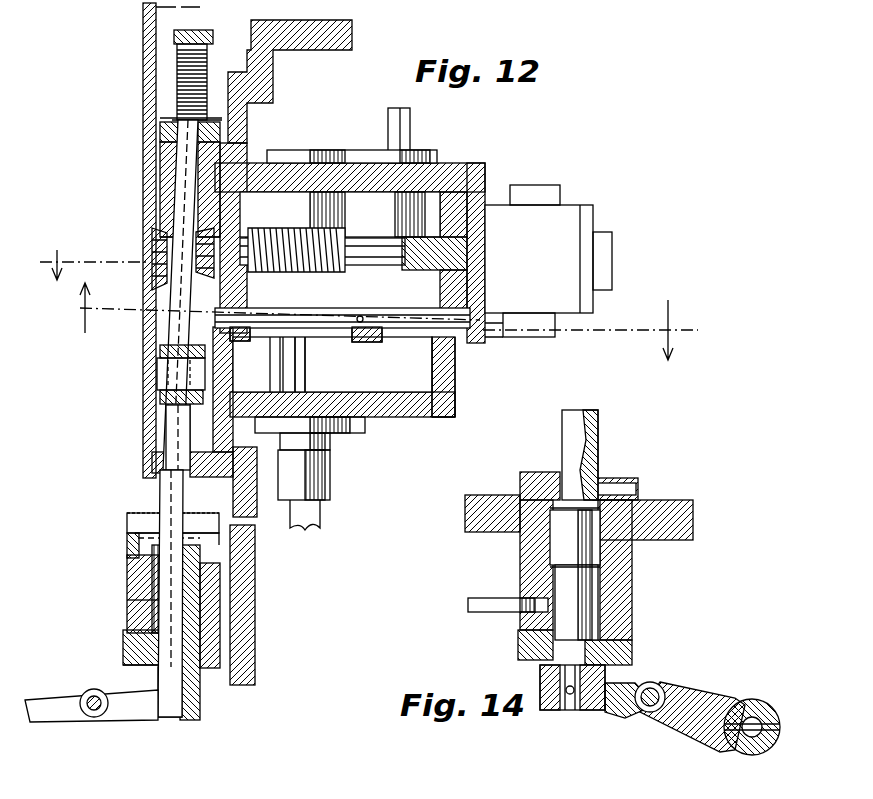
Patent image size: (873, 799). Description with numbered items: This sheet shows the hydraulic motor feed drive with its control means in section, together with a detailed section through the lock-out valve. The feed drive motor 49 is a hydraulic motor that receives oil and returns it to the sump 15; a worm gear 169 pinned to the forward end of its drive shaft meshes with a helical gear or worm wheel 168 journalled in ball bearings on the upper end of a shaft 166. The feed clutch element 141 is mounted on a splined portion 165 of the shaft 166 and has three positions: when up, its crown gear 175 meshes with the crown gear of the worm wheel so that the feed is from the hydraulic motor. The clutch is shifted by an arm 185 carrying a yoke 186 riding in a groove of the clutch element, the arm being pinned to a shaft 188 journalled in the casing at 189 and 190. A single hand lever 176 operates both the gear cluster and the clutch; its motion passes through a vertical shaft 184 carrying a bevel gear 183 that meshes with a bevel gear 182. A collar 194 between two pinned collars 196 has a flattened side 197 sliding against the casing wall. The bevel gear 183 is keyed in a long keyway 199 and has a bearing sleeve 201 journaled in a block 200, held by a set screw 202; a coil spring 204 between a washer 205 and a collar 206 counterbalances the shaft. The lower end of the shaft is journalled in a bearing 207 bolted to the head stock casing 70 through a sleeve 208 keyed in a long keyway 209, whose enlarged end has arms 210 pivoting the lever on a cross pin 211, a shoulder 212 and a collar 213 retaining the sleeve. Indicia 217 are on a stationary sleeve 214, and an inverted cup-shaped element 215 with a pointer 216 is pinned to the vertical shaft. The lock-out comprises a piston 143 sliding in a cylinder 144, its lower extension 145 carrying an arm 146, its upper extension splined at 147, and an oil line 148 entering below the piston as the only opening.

In FIG. 12, the sump 15 is at (369, 304).
In FIG. 12, the feed drive motor 49 is at (565, 222).
In FIG. 12, the head stock casing 70 is at (143, 468).
In FIG. 12, the feed clutch element 141 is at (330, 337).
In FIG. 14, the piston 143 is at (568, 540).
In FIG. 12, the cylinder 144 is at (425, 185).
In FIG. 14, the cylinder 144 is at (622, 585).
In FIG. 12, the lower extension 145 is at (410, 140).
In FIG. 14, the lower extension 145 is at (570, 712).
In FIG. 14, the arm 146 is at (622, 718).
In FIG. 14, the splined upper extension 147 is at (598, 461).
In FIG. 14, the oil line 148 is at (500, 612).
In FIG. 12, the splined portion 165 is at (310, 355).
In FIG. 12, the shaft 166 is at (312, 516).
In FIG. 12, the helical gear or worm wheel 168 is at (290, 228).
In FIG. 12, the worm gear 169 is at (340, 240).
In FIG. 12, the crown gear 175 is at (283, 360).
In FIG. 12, the hand lever 176 is at (55, 700).
In FIG. 12, the bevel gear 182 is at (152, 268).
In FIG. 12, the bevel gear 183 is at (172, 232).
In FIG. 12, the vertical shaft 184 is at (176, 446).
In FIG. 12, the arm 185 is at (372, 328).
In FIG. 14, the arm 185 is at (715, 697).
In FIG. 12, the yoke 186 is at (365, 343).
In FIG. 14, the yoke 186 is at (642, 688).
In FIG. 12, the shaft 188 is at (455, 375).
In FIG. 14, the shaft 188 is at (752, 755).
In FIG. 12, the journal 189 is at (282, 337).
In FIG. 12, the journal 190 is at (455, 352).
In FIG. 12, the collar 194 is at (158, 383).
In FIG. 12, the pinned collars 196 is at (162, 351).
In FIG. 12, the flattened side 197 is at (166, 422).
In FIG. 12, the long keyway 199 is at (170, 157).
In FIG. 12, the block 200 is at (162, 183).
In FIG. 12, the bearing sleeve 201 is at (172, 200).
In FIG. 12, the set screw 202 is at (168, 137).
In FIG. 12, the coil spring 204 is at (177, 80).
In FIG. 12, the washer 205 is at (175, 128).
In FIG. 12, the collar 206 is at (188, 30).
In FIG. 12, the bearing 207 is at (205, 627).
In FIG. 12, the sleeve 208 is at (192, 602).
In FIG. 12, the long keyway 209 is at (140, 539).
In FIG. 12, the arms 210 is at (160, 712).
In FIG. 12, the cross pin 211 is at (92, 712).
In FIG. 12, the shoulder 212 is at (132, 648).
In FIG. 12, the collar 213 is at (200, 556).
In FIG. 12, the stationary sleeve 214 is at (127, 612).
In FIG. 12, the inverted cup-shaped element 215 is at (130, 527).
In FIG. 12, the pointer 216 is at (128, 572).
In FIG. 12, the indicia 217 is at (127, 588).